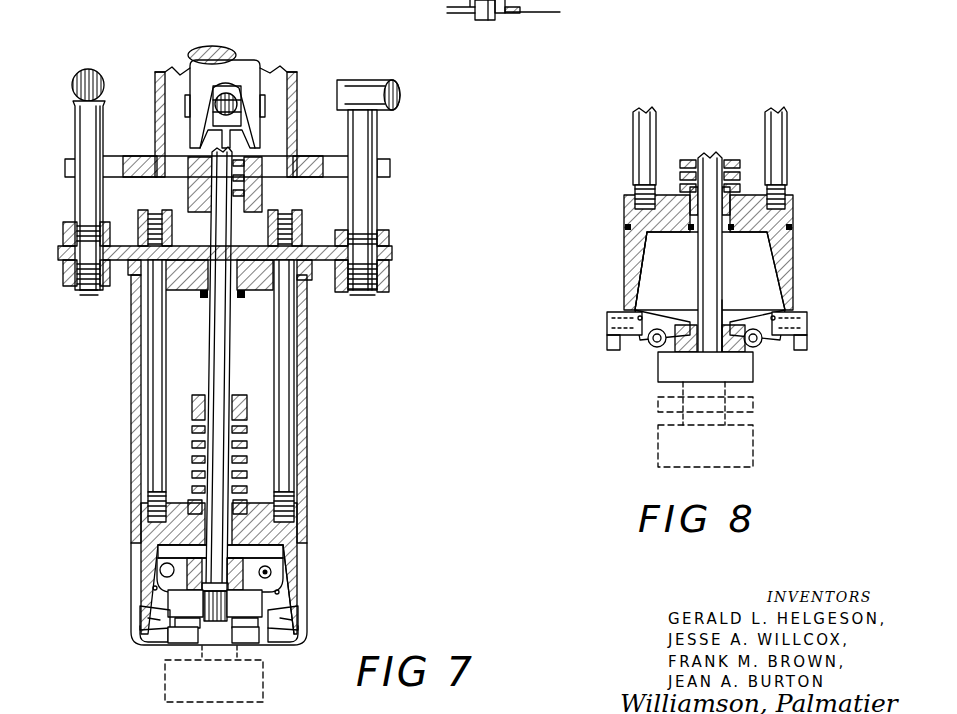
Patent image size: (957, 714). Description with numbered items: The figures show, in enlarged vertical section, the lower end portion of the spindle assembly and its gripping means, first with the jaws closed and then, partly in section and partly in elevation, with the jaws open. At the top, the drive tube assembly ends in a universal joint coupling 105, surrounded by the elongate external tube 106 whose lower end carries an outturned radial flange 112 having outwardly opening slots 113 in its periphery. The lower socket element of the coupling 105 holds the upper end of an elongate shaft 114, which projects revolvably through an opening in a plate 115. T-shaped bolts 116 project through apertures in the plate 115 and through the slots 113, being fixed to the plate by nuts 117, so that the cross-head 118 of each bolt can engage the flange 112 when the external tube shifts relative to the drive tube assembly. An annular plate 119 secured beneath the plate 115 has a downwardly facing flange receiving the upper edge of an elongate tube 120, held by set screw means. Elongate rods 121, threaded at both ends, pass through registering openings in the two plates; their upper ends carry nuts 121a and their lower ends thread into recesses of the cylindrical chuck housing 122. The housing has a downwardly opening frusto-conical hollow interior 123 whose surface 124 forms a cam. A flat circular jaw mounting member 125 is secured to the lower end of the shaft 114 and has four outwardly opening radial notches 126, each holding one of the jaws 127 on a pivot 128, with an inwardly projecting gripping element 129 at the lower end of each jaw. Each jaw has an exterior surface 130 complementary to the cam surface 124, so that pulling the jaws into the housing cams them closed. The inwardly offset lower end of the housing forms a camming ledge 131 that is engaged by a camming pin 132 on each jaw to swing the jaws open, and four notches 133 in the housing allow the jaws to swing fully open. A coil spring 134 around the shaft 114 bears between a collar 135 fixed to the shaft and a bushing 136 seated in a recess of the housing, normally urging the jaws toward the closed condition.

In FIG. 7, the universal joint coupling 105 is at (215, 47).
In FIG. 7, the external tube 106 is at (157, 75).
In FIG. 7, the radial flange 112 is at (308, 160).
In FIG. 8, the radial flange 112 is at (518, 15).
In FIG. 7, the slots 113 is at (70, 165).
In FIG. 8, the slots 113 is at (520, 11).
In FIG. 7, the shaft 114 is at (212, 337).
In FIG. 8, the shaft 114 is at (710, 165).
In FIG. 7, the plate 115 is at (418, 257).
In FIG. 7, the T-shaped bolts 116 is at (84, 200).
In FIG. 7, the nuts 117 is at (68, 288).
In FIG. 7, the cross-head 118 is at (90, 71).
In FIG. 7, the annular plate 119 is at (312, 285).
In FIG. 7, the tube 120 is at (130, 402).
In FIG. 7, the rods 121 is at (150, 448).
In FIG. 8, the rods 121 is at (640, 136).
In FIG. 7, the nuts 121a is at (140, 225).
In FIG. 7, the chuck housing 122 is at (137, 572).
In FIG. 8, the chuck housing 122 is at (796, 214).
In FIG. 7, the hollow interior 123 is at (168, 550).
In FIG. 8, the hollow interior 123 is at (768, 257).
In FIG. 7, the cam surface 124 is at (272, 548).
In FIG. 8, the cam surface 124 is at (652, 246).
In FIG. 7, the jaw mounting member 125 is at (245, 603).
In FIG. 8, the jaw mounting member 125 is at (735, 352).
In FIG. 7, the radial notches 126 is at (186, 603).
In FIG. 8, the radial notches 126 is at (655, 352).
In FIG. 7, the jaws 127 is at (148, 622).
In FIG. 8, the jaws 127 is at (608, 322).
In FIG. 7, the pivot 128 is at (268, 576).
In FIG. 8, the pivot 128 is at (758, 350).
In FIG. 7, the gripping element 129 is at (260, 636).
In FIG. 8, the gripping element 129 is at (612, 348).
In FIG. 7, the exterior surface 130 is at (140, 610).
In FIG. 8, the exterior surface 130 is at (622, 310).
In FIG. 7, the camming ledge 131 is at (150, 637).
In FIG. 8, the camming ledge 131 is at (650, 348).
In FIG. 7, the camming pin 132 is at (152, 588).
In FIG. 8, the camming pin 132 is at (643, 316).
In FIG. 7, the notches 133 is at (205, 645).
In FIG. 8, the notches 133 is at (722, 322).
In FIG. 7, the coil spring 134 is at (247, 455).
In FIG. 8, the coil spring 134 is at (684, 162).
In FIG. 7, the collar 135 is at (195, 398).
In FIG. 7, the bushing 136 is at (192, 508).
In FIG. 8, the bushing 136 is at (735, 195).